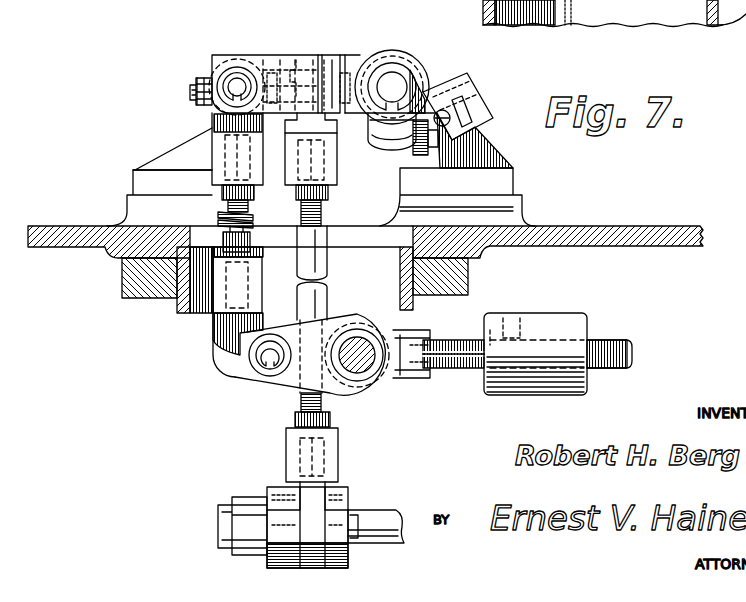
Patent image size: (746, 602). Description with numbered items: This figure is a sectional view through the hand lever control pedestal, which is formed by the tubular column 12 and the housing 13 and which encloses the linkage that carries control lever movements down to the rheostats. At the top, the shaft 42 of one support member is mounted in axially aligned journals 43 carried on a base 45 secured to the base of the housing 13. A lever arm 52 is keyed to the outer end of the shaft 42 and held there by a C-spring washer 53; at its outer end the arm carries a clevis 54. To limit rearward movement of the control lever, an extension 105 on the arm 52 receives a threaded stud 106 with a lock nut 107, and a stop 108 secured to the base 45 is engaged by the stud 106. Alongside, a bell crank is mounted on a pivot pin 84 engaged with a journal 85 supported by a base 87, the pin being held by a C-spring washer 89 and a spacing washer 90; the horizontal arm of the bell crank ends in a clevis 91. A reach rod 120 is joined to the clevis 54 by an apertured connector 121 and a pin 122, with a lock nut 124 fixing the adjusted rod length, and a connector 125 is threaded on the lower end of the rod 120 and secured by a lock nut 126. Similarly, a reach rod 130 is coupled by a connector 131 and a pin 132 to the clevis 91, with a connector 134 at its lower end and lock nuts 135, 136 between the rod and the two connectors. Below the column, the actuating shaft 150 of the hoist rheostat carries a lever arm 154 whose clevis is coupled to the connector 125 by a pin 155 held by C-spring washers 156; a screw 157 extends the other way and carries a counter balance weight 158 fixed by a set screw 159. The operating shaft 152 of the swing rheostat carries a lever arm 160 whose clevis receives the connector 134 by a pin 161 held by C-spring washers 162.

The tubular column 12 is at (422, 304).
The housing 13 is at (592, 222).
The shaft 42 is at (395, 85).
The journals 43 is at (392, 50).
The base 45 is at (516, 172).
The lever arm 52 is at (327, 62).
The C-spring washer 53 is at (414, 72).
The clevis 54 is at (283, 60).
The pivot pin 84 is at (192, 82).
The journal 85 is at (242, 55).
The base 87 is at (133, 181).
The C-spring washer 89 is at (198, 73).
The spacing washer 90 is at (206, 66).
The clevis 91 is at (292, 72).
The extension 105 is at (383, 153).
The stud 106 is at (437, 141).
The lock nut 107 is at (422, 157).
The stop 108 is at (494, 123).
The reach rod 120 is at (253, 219).
The apertured connector 121 is at (212, 152).
The pin 122 is at (239, 86).
The lock nut 124 is at (222, 193).
The connector 125 is at (212, 335).
The lock nut 126 is at (267, 250).
The reach rod 130 is at (330, 266).
The connector 131 is at (328, 165).
The pin 132 is at (358, 68).
The connector 134 is at (340, 456).
The lock nut 135 is at (328, 190).
The lock nut 136 is at (331, 419).
The actuating shaft 150 is at (368, 366).
The operating shaft 152 is at (402, 541).
The lever arm 154 is at (291, 388).
The pin 155 is at (268, 356).
The C-spring washers 156 is at (262, 371).
The screw 157 is at (454, 370).
The counter balance weight 158 is at (572, 314).
The set screw 159 is at (522, 324).
The lever arm 160 is at (348, 550).
The pin 161 is at (357, 522).
The C-spring washers 162 is at (349, 512).